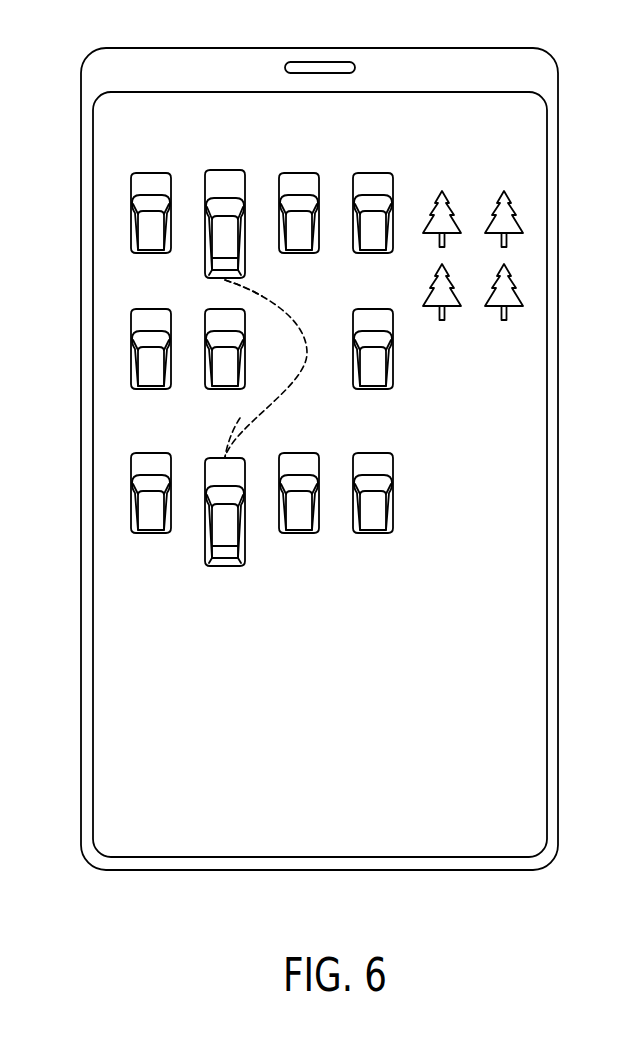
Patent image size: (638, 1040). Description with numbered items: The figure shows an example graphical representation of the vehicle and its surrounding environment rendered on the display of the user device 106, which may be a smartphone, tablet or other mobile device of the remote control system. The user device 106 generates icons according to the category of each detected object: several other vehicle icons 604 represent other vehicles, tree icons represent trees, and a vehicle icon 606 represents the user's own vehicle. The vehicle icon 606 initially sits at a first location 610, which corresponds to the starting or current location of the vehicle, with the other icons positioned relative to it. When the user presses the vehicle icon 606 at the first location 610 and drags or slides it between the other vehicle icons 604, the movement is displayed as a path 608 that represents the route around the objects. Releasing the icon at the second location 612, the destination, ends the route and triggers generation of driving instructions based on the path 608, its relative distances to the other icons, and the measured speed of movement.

The user device 106 is at (90, 727).
The other vehicle icon 604 is at (225, 168).
The vehicle icon 606 is at (227, 567).
The path 608 is at (300, 372).
The first location 610 is at (225, 457).
The second location 612 is at (228, 282).